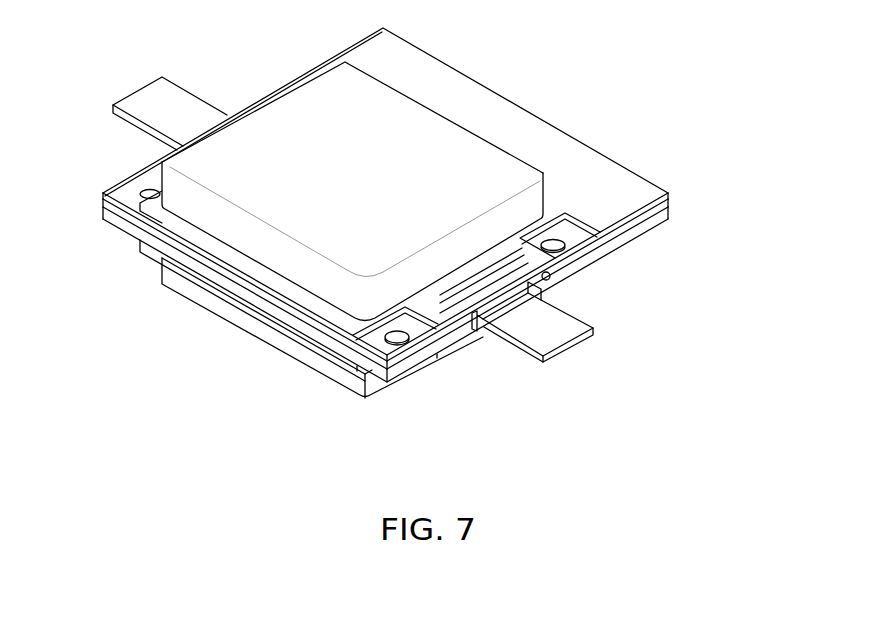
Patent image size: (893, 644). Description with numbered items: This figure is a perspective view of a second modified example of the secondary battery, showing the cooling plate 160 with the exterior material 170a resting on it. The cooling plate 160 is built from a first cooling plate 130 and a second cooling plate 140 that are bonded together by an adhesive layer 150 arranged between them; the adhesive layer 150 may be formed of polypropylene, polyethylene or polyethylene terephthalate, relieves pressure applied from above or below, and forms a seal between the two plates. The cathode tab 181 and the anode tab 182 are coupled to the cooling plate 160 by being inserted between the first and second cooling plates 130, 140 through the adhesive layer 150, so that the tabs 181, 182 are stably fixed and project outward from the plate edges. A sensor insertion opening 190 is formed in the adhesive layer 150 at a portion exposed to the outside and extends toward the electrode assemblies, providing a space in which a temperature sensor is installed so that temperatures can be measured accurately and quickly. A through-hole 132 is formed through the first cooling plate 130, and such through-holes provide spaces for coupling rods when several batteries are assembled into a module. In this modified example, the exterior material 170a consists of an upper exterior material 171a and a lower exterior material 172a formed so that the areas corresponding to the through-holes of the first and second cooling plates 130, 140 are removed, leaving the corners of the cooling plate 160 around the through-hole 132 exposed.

The first cooling plate 130 is at (668, 193).
The through-hole 132 is at (556, 238).
The second cooling plate 140 is at (668, 220).
The adhesive layer 150 is at (668, 208).
The cooling plate 160 is at (456, 205).
The exterior material 170a is at (266, 319).
The upper exterior material 171a is at (173, 219).
The lower exterior material 172a is at (177, 275).
The cathode tab 181 is at (587, 328).
The anode tab 182 is at (182, 103).
The sensor insertion opening 190 is at (552, 278).